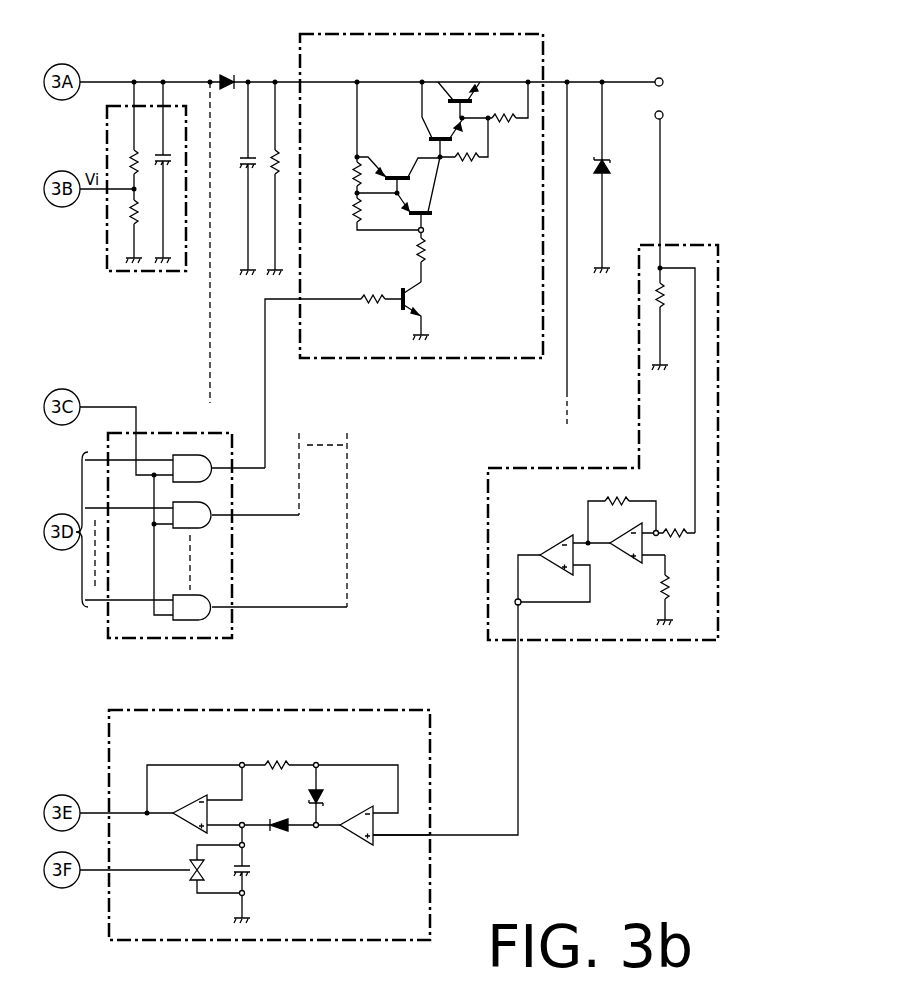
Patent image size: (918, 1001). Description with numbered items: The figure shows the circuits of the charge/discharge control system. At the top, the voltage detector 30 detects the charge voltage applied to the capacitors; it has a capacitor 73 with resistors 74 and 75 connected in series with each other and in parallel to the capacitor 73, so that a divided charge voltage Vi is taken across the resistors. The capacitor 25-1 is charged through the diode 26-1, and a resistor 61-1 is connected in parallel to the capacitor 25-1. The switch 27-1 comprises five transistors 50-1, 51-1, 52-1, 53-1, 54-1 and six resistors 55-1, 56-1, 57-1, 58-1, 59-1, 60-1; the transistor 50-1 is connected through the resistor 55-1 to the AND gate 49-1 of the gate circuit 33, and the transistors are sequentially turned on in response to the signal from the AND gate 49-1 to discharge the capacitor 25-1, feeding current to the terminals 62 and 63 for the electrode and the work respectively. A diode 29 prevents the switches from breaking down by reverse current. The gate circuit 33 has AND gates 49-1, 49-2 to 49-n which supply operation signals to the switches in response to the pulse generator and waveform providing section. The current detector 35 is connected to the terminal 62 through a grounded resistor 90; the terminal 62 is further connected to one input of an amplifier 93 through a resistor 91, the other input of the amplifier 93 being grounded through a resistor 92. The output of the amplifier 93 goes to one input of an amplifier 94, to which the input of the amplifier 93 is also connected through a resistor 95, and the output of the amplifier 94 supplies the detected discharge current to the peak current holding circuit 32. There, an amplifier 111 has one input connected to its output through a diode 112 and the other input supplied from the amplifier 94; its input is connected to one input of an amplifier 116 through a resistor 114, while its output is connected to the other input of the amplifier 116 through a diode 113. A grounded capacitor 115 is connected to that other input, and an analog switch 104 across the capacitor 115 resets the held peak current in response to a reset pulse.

The diode 26-1 is at (228, 73).
The capacitor 25-1 is at (252, 155).
The switch 27-1 is at (417, 34).
The voltage detector 30 is at (156, 275).
The capacitor 73 is at (157, 152).
The resistor 74 is at (130, 158).
The resistor 75 is at (128, 216).
The resistor 61-1 is at (282, 170).
The resistor 58-1 is at (356, 170).
The resistor 57-1 is at (355, 210).
The transistor 54-1 is at (480, 66).
The transistor 53-1 is at (438, 128).
The transistor 52-1 is at (396, 170).
The transistor 51-1 is at (432, 218).
The transistor 50-1 is at (413, 301).
The resistor 60-1 is at (504, 124).
The resistor 59-1 is at (466, 162).
The resistor 56-1 is at (426, 252).
The resistor 55-1 is at (371, 305).
The diode 29 is at (610, 167).
The terminal 63 is at (663, 84).
The terminal 62 is at (663, 118).
The resistor 90 is at (672, 298).
The current detector 35 is at (536, 468).
The resistor 95 is at (608, 498).
The amplifier 94 is at (558, 535).
The amplifier 93 is at (628, 559).
The resistor 91 is at (687, 531).
The resistor 92 is at (672, 582).
The gate circuit 33 is at (148, 643).
The AND gate 49-1 is at (222, 480).
The AND gate 49-2 is at (222, 530).
The AND gate 49-n is at (222, 618).
The peak current holding circuit 32 is at (418, 710).
The resistor 114 is at (294, 758).
The diode 112 is at (323, 797).
The amplifier 116 is at (191, 825).
The diode 113 is at (281, 836).
The amplifier 111 is at (360, 846).
The analog switch 104 is at (198, 885).
The capacitor 115 is at (250, 876).